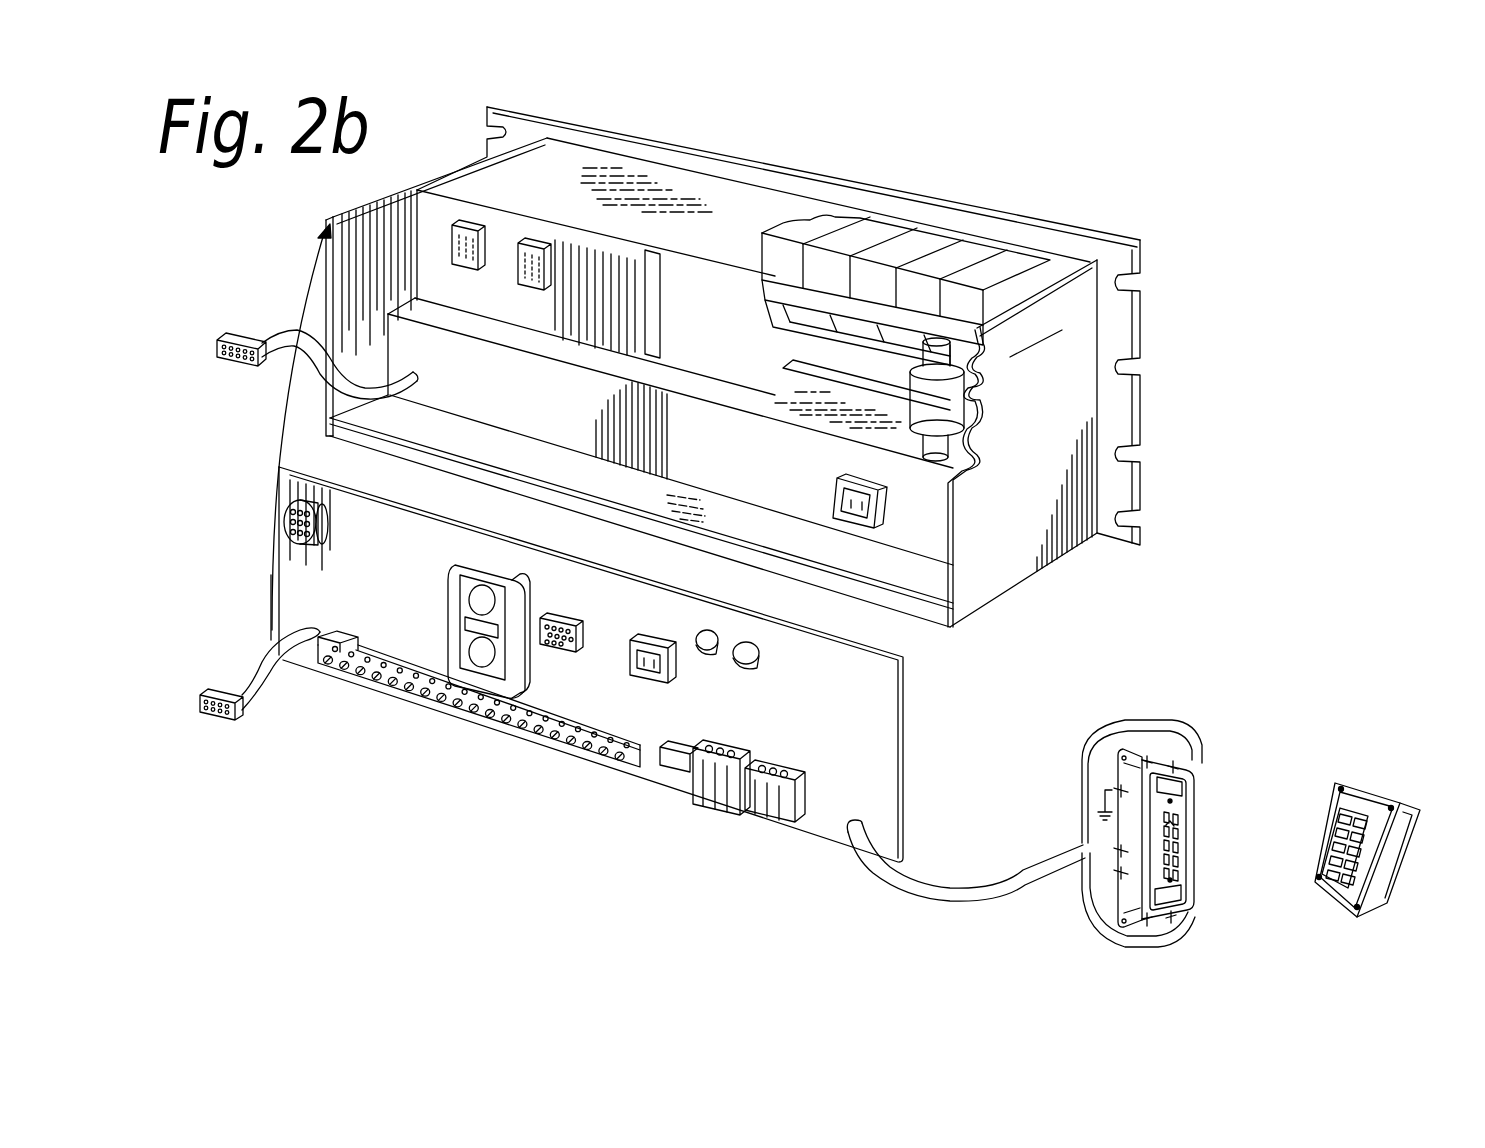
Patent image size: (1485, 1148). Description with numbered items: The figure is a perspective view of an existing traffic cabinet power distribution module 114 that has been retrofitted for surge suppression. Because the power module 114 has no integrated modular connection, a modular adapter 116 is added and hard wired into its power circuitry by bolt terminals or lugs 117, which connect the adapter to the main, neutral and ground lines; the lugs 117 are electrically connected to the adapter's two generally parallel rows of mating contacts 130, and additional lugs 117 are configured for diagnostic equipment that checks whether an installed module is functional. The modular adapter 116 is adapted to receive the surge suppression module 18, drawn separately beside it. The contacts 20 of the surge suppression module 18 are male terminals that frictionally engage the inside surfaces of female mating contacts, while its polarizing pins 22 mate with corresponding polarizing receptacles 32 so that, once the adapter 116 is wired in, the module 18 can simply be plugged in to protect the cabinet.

The power distribution module 114 is at (1185, 248).
The modular adapter 116 is at (1194, 776).
The bolt terminals or lugs 117 is at (1146, 758).
The polarizing receptacles 32 is at (1178, 817).
The mating contacts 130 is at (1178, 870).
The surge suppression module 18 is at (1366, 780).
The polarizing pins 22 is at (1337, 832).
The contacts 20 is at (1352, 828).